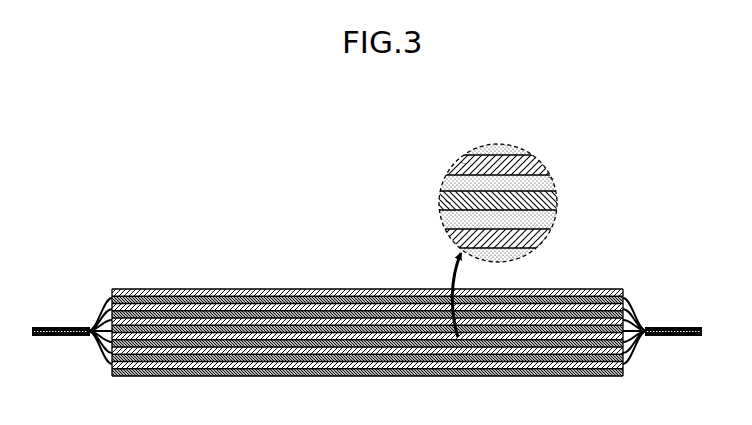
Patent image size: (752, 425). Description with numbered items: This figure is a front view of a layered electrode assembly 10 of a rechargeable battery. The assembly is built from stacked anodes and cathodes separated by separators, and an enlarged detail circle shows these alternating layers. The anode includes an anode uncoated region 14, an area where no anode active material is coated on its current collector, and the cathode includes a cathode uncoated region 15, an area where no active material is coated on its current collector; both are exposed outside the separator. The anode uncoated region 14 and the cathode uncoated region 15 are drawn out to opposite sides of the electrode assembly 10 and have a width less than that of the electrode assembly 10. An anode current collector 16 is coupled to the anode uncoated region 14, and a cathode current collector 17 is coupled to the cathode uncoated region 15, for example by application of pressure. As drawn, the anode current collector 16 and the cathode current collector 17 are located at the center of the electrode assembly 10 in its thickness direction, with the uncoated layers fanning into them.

The electrode assembly 10 is at (283, 282).
The anode uncoated region 14 is at (95, 318).
The cathode uncoated region 15 is at (638, 323).
The anode current collector 16 is at (45, 325).
The cathode current collector 17 is at (693, 324).